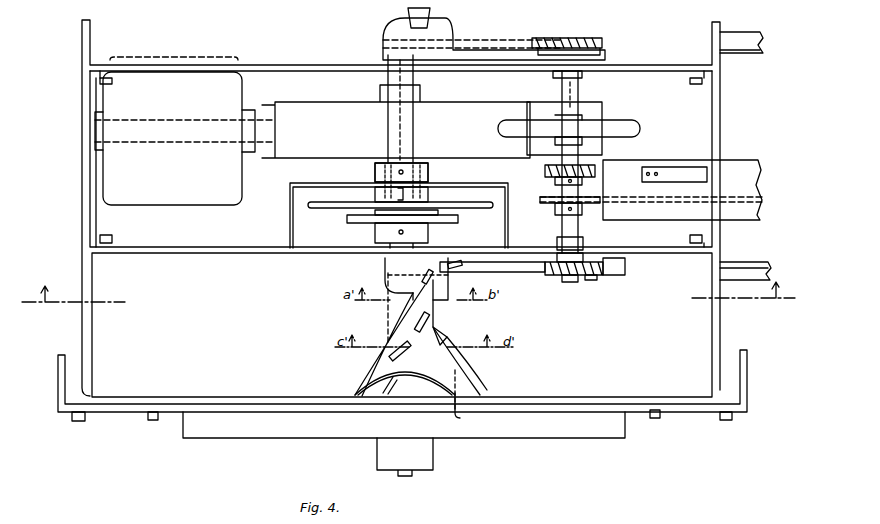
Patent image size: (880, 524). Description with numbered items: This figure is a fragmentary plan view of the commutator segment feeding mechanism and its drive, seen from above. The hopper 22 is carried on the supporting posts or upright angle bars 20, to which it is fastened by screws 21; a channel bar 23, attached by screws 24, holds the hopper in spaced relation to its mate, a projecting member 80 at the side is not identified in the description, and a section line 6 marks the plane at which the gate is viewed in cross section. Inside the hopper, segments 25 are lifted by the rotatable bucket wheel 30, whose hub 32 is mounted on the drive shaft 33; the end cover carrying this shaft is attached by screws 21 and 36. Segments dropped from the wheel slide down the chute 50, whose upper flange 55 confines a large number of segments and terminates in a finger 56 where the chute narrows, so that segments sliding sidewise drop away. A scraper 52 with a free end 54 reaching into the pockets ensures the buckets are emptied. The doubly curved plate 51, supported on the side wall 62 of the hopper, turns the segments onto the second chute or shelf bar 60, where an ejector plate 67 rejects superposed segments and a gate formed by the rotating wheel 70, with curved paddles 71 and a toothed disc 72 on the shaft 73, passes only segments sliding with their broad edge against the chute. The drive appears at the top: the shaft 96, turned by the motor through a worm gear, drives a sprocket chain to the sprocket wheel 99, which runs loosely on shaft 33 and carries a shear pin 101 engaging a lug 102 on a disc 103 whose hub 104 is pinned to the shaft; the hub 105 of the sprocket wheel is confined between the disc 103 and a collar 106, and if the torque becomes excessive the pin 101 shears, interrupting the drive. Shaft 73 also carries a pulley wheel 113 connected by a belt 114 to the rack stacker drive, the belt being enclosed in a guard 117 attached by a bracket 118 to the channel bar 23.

The section line 6- 6 is at (408, 282).
The supporting posts 20 is at (58, 398).
The screws 21 is at (78, 422).
The hopper 22 is at (82, 47).
The channel bar 23 is at (82, 190).
The screws 24 is at (100, 92).
The segments 25 is at (404, 352).
The bucket wheel 30 is at (625, 430).
The hub 32 is at (433, 455).
The drive shaft 33 is at (413, 140).
The screws 36 is at (153, 421).
The chute 50 is at (362, 385).
The plate 51 is at (385, 282).
The scraper 52 is at (413, 375).
The free end 54 is at (471, 412).
The flange 55 is at (465, 365).
The finger 56 is at (445, 338).
The second chute 60 is at (605, 278).
The side wall 62 is at (652, 253).
The ejector plate 67 is at (483, 262).
The gate wheel 70 is at (565, 278).
The paddles 71 is at (575, 282).
The toothed disc 72 is at (597, 280).
The shaft 73 is at (580, 230).
The rail 80 is at (740, 50).
The shaft 96 is at (393, 115).
The sprocket wheel 99 is at (310, 210).
The shear pin 101 is at (440, 205).
The lug 102 is at (452, 222).
The disc 103 is at (347, 222).
The hub 104 is at (375, 232).
The hub 105 is at (375, 194).
The collar 106 is at (428, 172).
The pulley wheel 113 is at (555, 212).
The belt 114 is at (545, 200).
The guard 117 is at (638, 165).
The bracket 118 is at (686, 182).